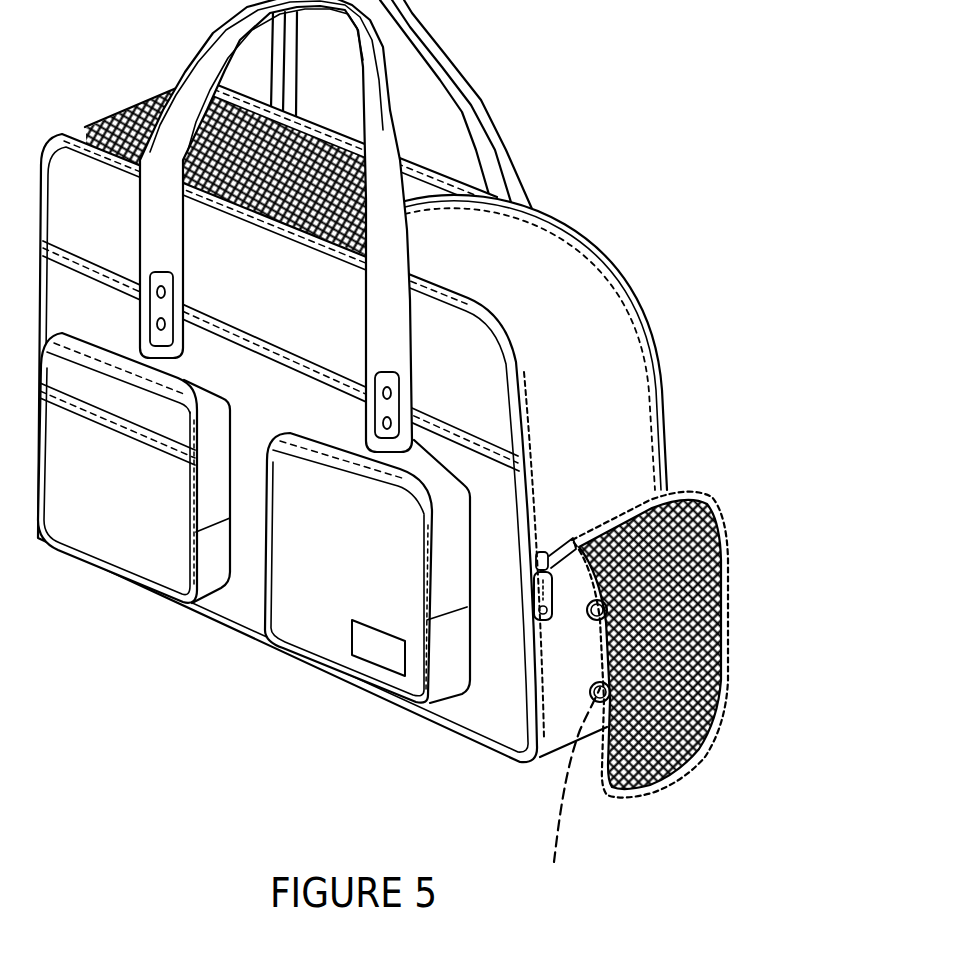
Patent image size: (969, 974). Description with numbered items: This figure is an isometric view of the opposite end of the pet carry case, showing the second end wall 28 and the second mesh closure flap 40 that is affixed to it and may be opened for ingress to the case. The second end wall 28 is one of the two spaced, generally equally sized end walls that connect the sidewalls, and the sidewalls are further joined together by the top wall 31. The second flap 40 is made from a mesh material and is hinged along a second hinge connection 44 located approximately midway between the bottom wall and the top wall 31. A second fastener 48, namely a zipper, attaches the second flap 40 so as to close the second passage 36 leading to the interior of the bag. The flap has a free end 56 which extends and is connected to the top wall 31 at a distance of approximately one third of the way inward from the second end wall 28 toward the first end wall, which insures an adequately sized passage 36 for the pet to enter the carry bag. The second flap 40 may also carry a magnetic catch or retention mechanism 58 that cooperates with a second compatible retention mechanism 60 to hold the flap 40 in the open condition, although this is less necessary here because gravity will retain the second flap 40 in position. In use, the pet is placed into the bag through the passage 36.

The second end wall 28 is at (557, 698).
The top wall 31 is at (315, 198).
The second passage 36 is at (591, 416).
The second mesh closure flap 40 is at (727, 627).
The second hinge connection 44 is at (573, 540).
The second fastener 48 is at (537, 562).
The free end 56 is at (688, 770).
The magnetic catch or retention mechanism 58 is at (723, 700).
The second compatible retention mechanism 60 is at (572, 802).